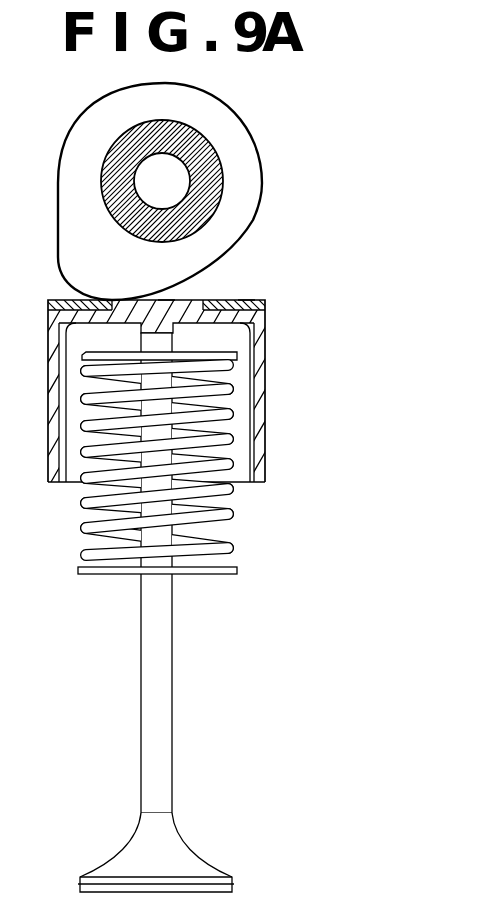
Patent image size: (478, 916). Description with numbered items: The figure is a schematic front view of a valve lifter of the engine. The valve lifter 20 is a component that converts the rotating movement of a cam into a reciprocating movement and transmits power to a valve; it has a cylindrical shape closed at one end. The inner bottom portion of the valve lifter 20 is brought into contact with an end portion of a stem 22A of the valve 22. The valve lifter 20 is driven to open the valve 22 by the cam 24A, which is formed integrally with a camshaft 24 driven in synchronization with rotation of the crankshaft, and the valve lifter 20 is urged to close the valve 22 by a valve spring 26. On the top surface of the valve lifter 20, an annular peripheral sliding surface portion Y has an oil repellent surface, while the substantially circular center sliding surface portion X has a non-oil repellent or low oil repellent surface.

The valve lifter 20 is at (263, 385).
The valve 22 is at (174, 612).
The stem 22A is at (158, 667).
The camshaft 24 is at (185, 191).
The cam 24A is at (263, 187).
The valve spring 26 is at (237, 512).
The sliding surface portion X is at (165, 300).
The sliding surface portion Y is at (247, 300).